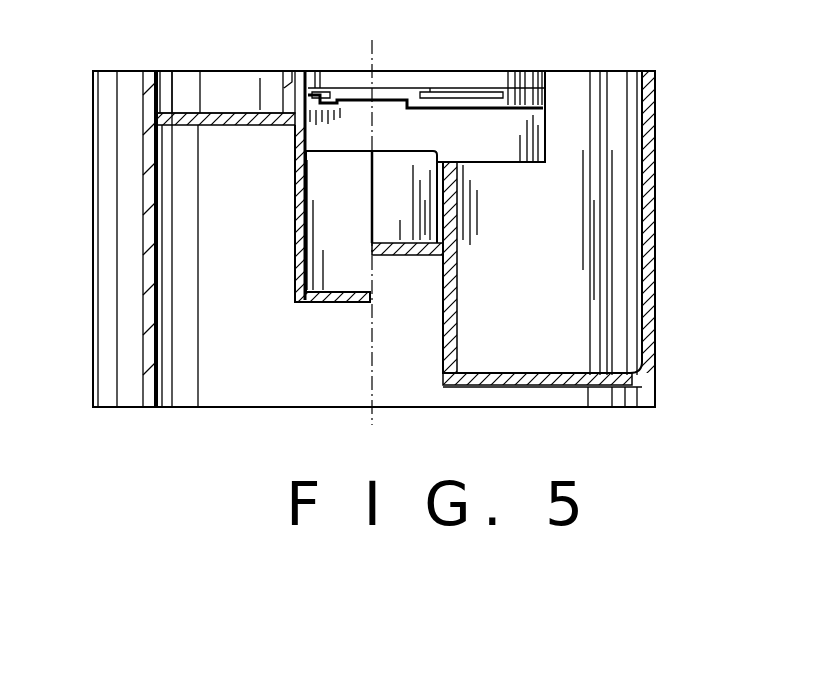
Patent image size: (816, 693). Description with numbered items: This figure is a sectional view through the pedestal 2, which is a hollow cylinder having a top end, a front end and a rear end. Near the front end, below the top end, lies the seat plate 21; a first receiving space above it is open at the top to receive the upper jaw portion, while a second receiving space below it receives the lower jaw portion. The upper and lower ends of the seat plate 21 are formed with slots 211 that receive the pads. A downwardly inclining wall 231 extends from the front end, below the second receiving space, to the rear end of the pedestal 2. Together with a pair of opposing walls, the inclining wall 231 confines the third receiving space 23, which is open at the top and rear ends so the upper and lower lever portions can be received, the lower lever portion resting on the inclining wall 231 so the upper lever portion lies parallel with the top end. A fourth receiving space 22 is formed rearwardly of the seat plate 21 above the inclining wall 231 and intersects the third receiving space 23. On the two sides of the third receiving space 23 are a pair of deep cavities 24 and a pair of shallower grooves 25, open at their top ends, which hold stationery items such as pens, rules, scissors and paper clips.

The pedestal 2 is at (78, 211).
The seat plate 21 is at (396, 90).
The slots 211 is at (311, 90).
The fourth receiving space 22 is at (533, 135).
The third receiving space 23 is at (395, 220).
The inclining wall 231 is at (340, 303).
The deep cavities 24 is at (598, 254).
The shallower grooves 25 is at (193, 86).